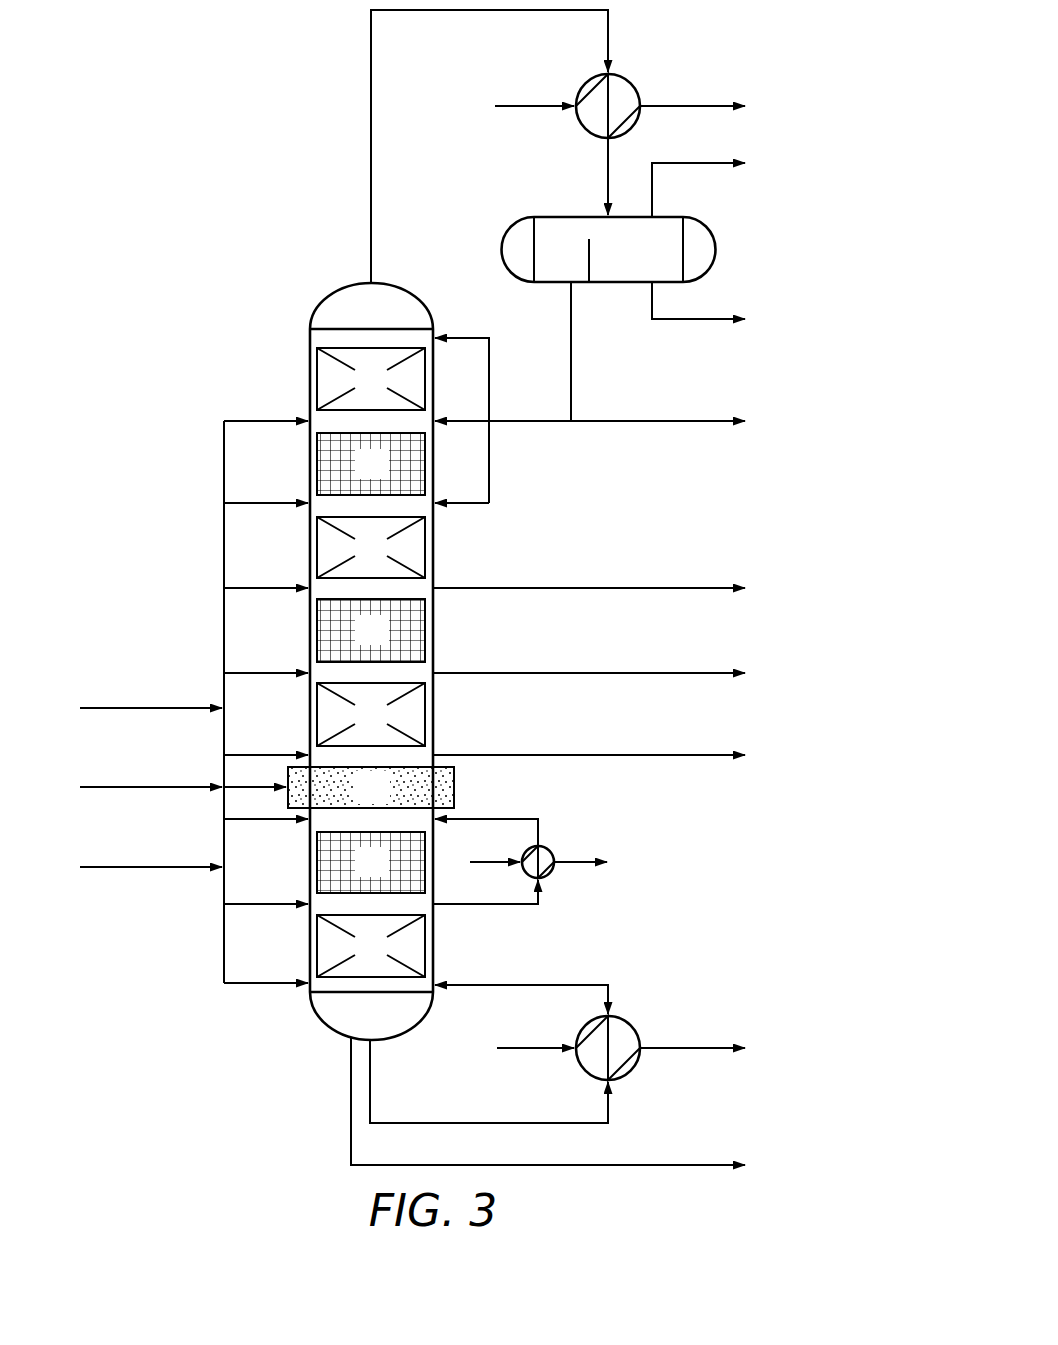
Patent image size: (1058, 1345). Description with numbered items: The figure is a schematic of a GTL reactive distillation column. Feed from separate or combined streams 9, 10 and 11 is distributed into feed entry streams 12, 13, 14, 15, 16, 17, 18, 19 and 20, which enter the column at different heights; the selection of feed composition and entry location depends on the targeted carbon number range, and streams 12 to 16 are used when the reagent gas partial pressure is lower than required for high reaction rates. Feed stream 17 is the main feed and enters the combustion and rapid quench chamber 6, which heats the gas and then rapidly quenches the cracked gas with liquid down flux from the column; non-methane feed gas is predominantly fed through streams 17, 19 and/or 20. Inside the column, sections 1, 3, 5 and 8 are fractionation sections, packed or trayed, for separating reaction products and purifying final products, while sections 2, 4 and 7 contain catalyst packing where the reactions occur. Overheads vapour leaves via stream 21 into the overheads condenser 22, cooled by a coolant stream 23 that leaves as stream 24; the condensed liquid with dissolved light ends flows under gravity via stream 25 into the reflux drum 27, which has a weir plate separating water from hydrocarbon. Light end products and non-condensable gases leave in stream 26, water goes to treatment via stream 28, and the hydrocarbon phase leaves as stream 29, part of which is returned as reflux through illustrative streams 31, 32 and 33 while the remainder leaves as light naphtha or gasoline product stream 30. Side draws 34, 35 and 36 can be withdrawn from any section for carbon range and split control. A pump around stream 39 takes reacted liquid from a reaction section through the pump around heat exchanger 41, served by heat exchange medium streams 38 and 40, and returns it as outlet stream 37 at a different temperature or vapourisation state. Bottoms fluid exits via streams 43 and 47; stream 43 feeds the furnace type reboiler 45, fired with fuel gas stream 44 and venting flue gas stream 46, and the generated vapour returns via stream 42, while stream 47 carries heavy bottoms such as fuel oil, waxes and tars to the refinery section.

The fractionation section 1 is at (363, 391).
The catalytic reaction section 2 is at (363, 476).
The fractionation section 3 is at (363, 559).
The catalytic reaction section 4 is at (363, 642).
The fractionation section 5 is at (363, 726).
The combustion and rapid quench chamber 6 is at (363, 799).
The catalytic reaction section 7 is at (363, 874).
The fractionation section 8 is at (363, 957).
The feed stream 9 is at (105, 707).
The feed stream 10 is at (105, 786).
The feed stream 11 is at (105, 866).
The feed entry stream 12 is at (254, 420).
The feed entry stream 13 is at (254, 502).
The feed entry stream 14 is at (254, 587).
The feed entry stream 15 is at (254, 672).
The feed entry stream 16 is at (255, 754).
The main feed stream 17 is at (236, 790).
The feed entry stream 18 is at (236, 822).
The feed entry stream 19 is at (254, 902).
The feed entry stream 20 is at (254, 982).
The overheads vapour stream 21 is at (370, 172).
The overheads condenser 22 is at (631, 82).
The coolant stream 23 is at (515, 105).
The coolant outlet stream 24 is at (714, 105).
The condensed liquid stream 25 is at (608, 172).
The light ends stream 26 is at (714, 162).
The reflux drum 27 is at (716, 250).
The water stream 28 is at (714, 321).
The hydrocarbon phase stream 29 is at (573, 362).
The light hydrocarbon product stream 30 is at (714, 422).
The reflux stream 31 is at (460, 336).
The reflux stream 32 is at (460, 419).
The reflux stream 33 is at (460, 501).
The side draw stream 34 is at (714, 587).
The side draw stream 35 is at (714, 672).
The side draw stream 36 is at (714, 754).
The pump around outlet stream 37 is at (495, 818).
The heat exchange medium stream 38 is at (469, 864).
The pump around stream 39 is at (494, 905).
The heat exchange medium outlet stream 40 is at (579, 860).
The pump around heat exchanger 41 is at (552, 876).
The reboiler vapour return stream 42 is at (546, 984).
The bottoms reboil stream 43 is at (479, 1122).
The fuel gas stream 44 is at (515, 1047).
The reboiler 45 is at (629, 1024).
The flue gas stream 46 is at (714, 1047).
The bottoms product stream 47 is at (714, 1164).